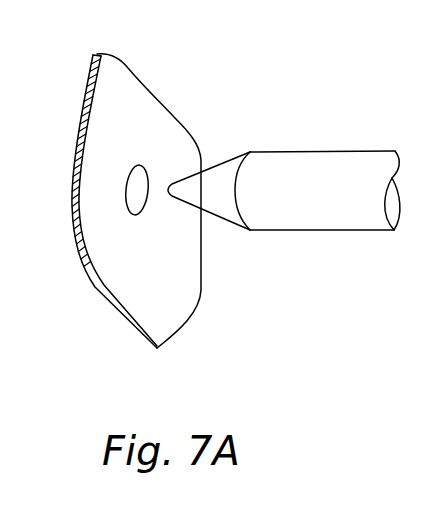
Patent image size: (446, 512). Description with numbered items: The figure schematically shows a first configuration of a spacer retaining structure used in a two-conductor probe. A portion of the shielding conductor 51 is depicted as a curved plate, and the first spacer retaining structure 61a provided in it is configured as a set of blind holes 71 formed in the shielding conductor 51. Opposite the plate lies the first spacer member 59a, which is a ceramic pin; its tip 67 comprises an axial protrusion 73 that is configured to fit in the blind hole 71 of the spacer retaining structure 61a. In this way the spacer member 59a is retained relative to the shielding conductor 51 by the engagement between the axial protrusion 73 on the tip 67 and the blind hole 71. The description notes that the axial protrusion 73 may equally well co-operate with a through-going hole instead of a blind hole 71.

The shielding conductor 51 is at (102, 140).
The blind hole 71 is at (138, 205).
The first spacer retaining structure 61a is at (140, 215).
The axial protrusion 73 is at (185, 175).
The first spacer member 59a is at (302, 178).
The tip 67 is at (181, 224).